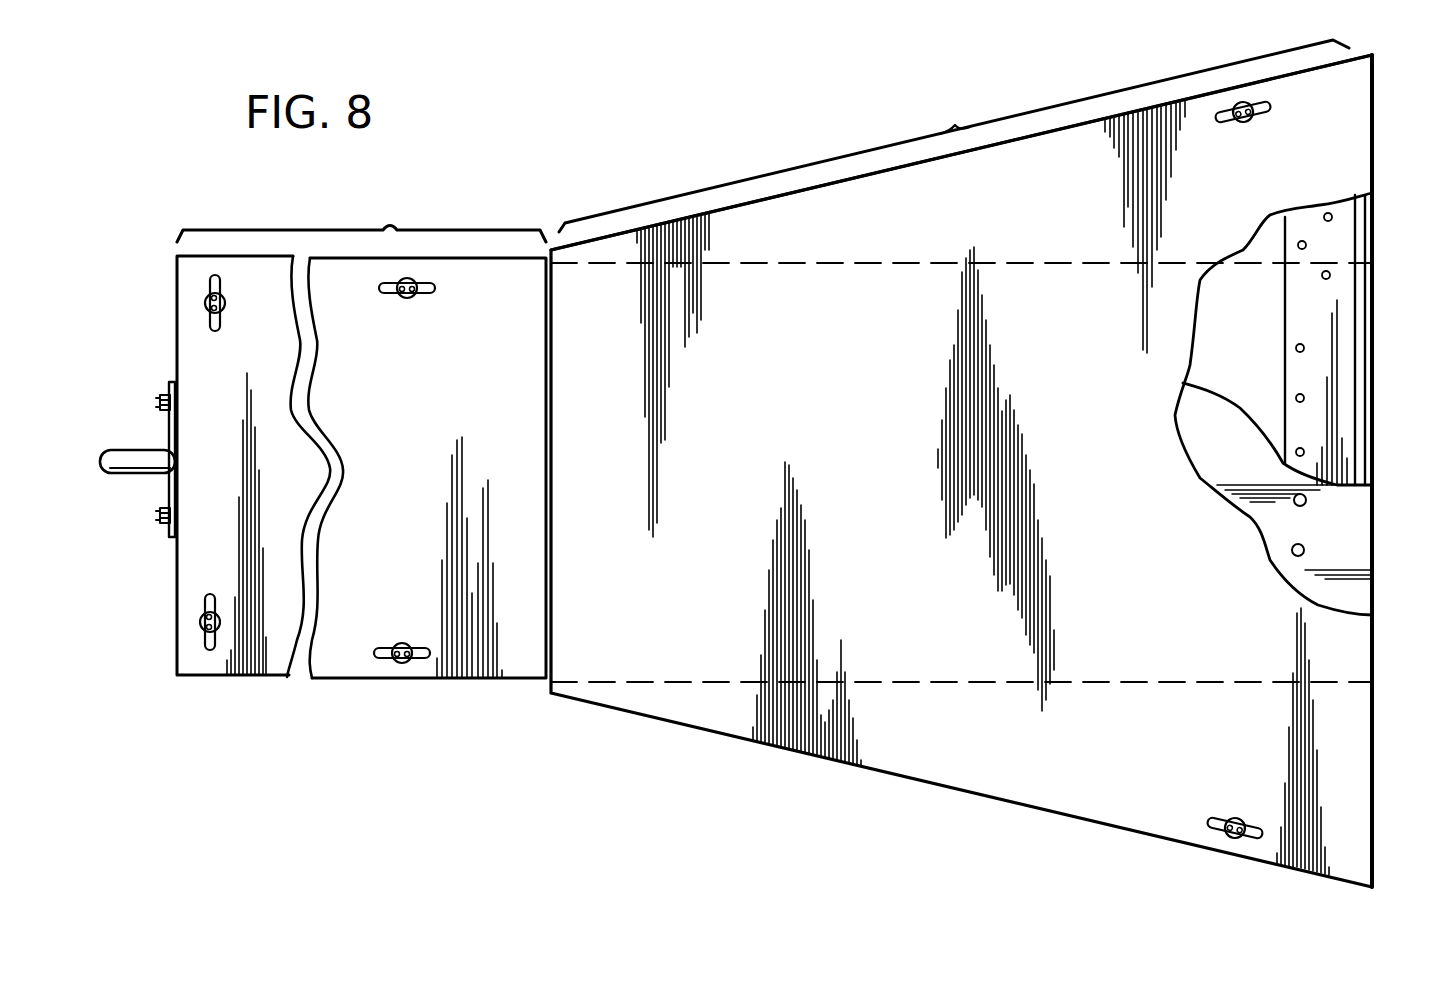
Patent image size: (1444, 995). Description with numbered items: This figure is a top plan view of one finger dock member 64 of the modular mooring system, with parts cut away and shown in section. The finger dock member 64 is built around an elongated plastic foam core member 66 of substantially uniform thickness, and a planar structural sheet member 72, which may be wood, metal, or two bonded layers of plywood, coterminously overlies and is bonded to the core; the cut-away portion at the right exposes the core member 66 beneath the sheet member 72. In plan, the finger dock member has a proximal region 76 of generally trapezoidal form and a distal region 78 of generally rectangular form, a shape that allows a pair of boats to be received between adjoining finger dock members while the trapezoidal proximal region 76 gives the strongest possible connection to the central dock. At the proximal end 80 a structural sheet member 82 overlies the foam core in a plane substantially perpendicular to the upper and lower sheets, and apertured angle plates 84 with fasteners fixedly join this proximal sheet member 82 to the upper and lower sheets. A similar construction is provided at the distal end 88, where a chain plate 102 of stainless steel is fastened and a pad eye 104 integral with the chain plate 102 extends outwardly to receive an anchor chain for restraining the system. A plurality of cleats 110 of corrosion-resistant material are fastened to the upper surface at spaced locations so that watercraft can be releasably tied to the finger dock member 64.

The finger dock member 64 is at (646, 220).
The plastic foam core member 66 is at (1248, 343).
The planar structural sheet member 72 is at (1240, 456).
The proximal region 76 is at (961, 145).
The distal region 78 is at (361, 434).
The proximal end 80 is at (1389, 422).
The structural sheet member 82 is at (1367, 362).
The angle plate 84 is at (1347, 307).
The distal end 88 is at (165, 315).
The chain plate 102 is at (158, 412).
The pad eye 104 is at (124, 476).
The cleat 110 is at (225, 310).